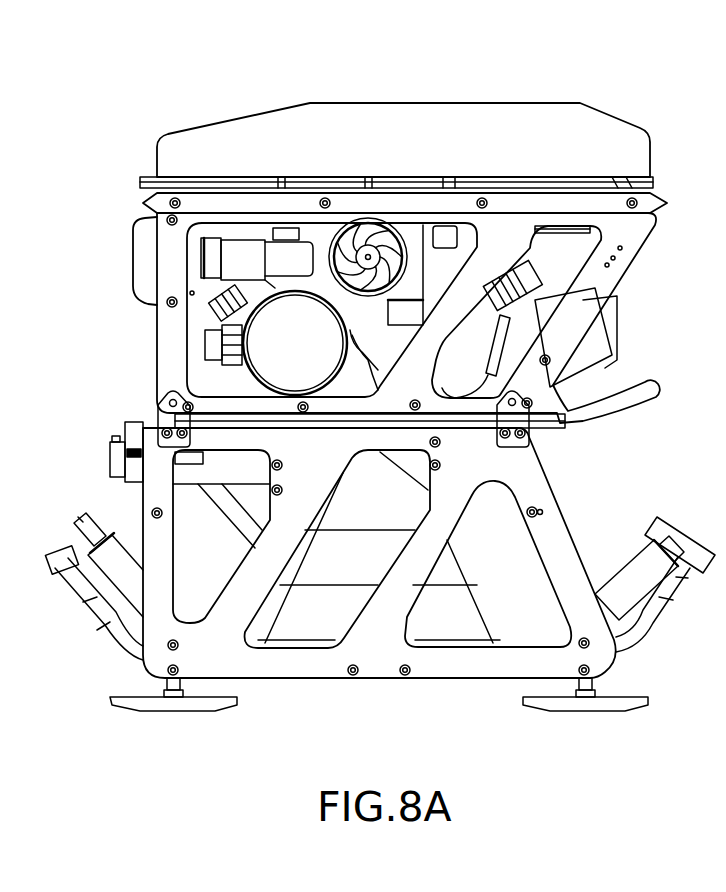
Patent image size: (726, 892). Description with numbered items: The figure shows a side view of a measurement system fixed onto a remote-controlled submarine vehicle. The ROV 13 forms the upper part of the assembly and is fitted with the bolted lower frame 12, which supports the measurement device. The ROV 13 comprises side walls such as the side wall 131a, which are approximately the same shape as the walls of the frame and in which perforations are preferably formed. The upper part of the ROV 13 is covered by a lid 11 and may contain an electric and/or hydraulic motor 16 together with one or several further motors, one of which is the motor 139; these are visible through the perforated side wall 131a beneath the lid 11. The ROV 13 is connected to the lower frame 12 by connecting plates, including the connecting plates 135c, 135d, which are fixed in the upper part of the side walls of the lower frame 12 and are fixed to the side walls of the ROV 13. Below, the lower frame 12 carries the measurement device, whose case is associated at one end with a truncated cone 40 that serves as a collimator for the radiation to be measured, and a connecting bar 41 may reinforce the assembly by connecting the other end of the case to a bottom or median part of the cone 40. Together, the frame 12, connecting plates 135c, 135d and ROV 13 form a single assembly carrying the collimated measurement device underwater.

The lid 11 is at (600, 124).
The frame 12 is at (583, 517).
The ROV 13 is at (641, 284).
The electric and/or hydraulic motor 16 is at (309, 343).
The truncated cone 40 is at (457, 622).
The connecting bar 41 is at (222, 498).
The side wall 131a is at (163, 331).
The connecting plate 135c is at (165, 405).
The connecting plate 135d is at (545, 420).
The motor 139 is at (364, 248).